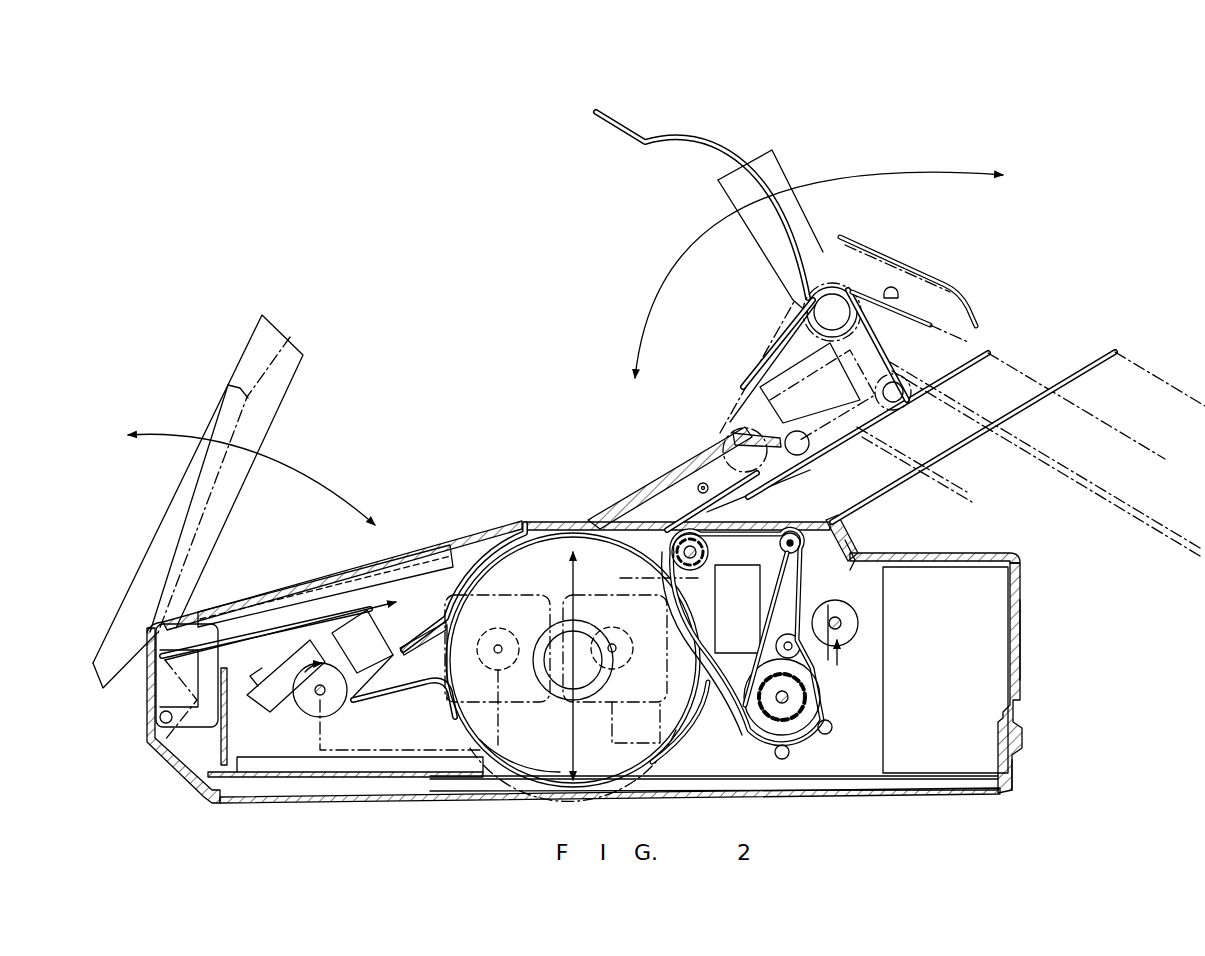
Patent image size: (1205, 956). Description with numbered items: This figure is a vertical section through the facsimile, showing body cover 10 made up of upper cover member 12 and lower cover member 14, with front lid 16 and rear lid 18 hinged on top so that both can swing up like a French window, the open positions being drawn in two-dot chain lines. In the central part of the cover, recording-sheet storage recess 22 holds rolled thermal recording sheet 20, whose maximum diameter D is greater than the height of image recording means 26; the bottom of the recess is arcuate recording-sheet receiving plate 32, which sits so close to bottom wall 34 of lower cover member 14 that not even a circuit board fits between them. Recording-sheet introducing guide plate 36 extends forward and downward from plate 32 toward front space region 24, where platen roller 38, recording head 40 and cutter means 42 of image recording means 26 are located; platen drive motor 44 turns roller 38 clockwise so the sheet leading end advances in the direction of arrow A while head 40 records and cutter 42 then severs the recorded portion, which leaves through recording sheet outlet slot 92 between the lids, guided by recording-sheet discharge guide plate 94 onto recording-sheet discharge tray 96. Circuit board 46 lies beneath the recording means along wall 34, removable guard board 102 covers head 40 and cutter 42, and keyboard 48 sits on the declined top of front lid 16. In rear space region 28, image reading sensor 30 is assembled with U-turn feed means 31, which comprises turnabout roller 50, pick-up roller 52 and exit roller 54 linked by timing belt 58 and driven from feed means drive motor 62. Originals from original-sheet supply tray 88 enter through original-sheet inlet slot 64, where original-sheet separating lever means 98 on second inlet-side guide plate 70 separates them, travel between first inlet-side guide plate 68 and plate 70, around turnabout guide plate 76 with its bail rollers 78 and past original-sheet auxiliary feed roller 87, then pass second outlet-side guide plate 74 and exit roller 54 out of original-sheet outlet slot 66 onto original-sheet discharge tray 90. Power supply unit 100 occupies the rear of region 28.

The body cover 10 is at (1026, 705).
The upper cover member 12 is at (1021, 641).
The lower cover member 14 is at (1013, 760).
The front lid 16 is at (462, 536).
The rear lid 18 is at (905, 553).
The rolled thermal recording sheet 20 is at (530, 772).
The recording-sheet storage recess 22 is at (598, 522).
The front space region 24 is at (428, 765).
The image recording means 26 is at (275, 710).
The rear space region 28 is at (838, 768).
The image reading sensor 30 is at (702, 641).
The U-turn feed means 31 is at (856, 668).
The recording-sheet receiving plate 32 is at (665, 771).
The bottom wall 34 is at (758, 796).
The recording-sheet introducing guide plate 36 is at (305, 718).
The platen roller 38 is at (345, 720).
The recording head 40 is at (272, 665).
The cutter means 42 is at (340, 628).
The platen drive motor 44 is at (540, 695).
The circuit board 46 is at (258, 779).
The keyboard 48 is at (410, 558).
The turnabout roller 50 is at (773, 733).
The pick-up roller 52 is at (708, 552).
The exit roller 54 is at (780, 552).
The timing belt 58 is at (770, 625).
The feed means drive motor 62 is at (623, 695).
The original-sheet inlet slot 64 is at (670, 520).
The original-sheet outlet slot 66 is at (822, 519).
The first inlet-side guide plate 68 is at (714, 700).
The second inlet-side guide plate 70 is at (776, 650).
The second outlet-side guide plate 74 is at (845, 558).
The turnabout guide plate 76 is at (830, 700).
The bail rollers 78 is at (832, 731).
The original-sheet auxiliary feed roller 87 is at (848, 623).
The original-sheet supply tray 88 is at (950, 382).
The original-sheet discharge tray 90 is at (1092, 372).
The recording sheet outlet slot 92 is at (532, 522).
The recording-sheet discharge guide plate 94 is at (416, 648).
The recording-sheet discharge tray 96 is at (633, 515).
The original-sheet separating lever means 98 is at (690, 482).
The power supply unit 100 is at (996, 603).
The removable guard board 102 is at (252, 603).
The arrow A is at (283, 618).
The maximum diameter D is at (573, 660).